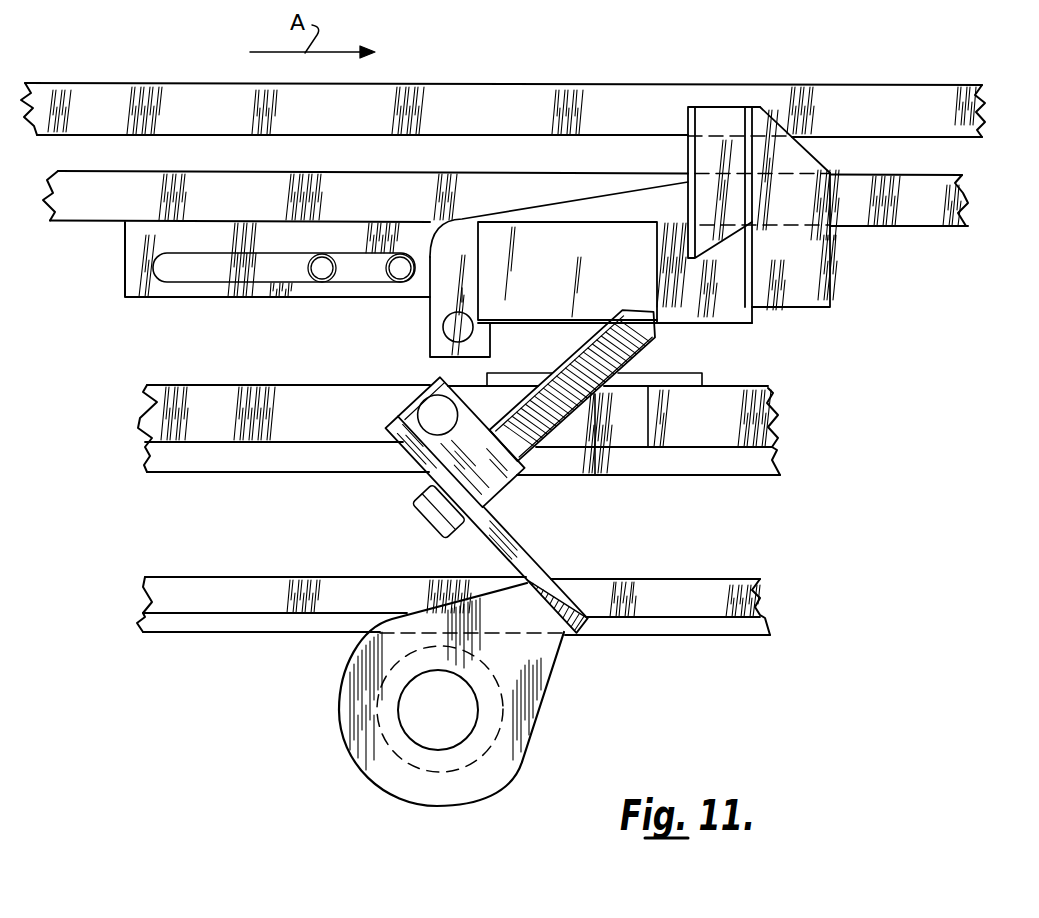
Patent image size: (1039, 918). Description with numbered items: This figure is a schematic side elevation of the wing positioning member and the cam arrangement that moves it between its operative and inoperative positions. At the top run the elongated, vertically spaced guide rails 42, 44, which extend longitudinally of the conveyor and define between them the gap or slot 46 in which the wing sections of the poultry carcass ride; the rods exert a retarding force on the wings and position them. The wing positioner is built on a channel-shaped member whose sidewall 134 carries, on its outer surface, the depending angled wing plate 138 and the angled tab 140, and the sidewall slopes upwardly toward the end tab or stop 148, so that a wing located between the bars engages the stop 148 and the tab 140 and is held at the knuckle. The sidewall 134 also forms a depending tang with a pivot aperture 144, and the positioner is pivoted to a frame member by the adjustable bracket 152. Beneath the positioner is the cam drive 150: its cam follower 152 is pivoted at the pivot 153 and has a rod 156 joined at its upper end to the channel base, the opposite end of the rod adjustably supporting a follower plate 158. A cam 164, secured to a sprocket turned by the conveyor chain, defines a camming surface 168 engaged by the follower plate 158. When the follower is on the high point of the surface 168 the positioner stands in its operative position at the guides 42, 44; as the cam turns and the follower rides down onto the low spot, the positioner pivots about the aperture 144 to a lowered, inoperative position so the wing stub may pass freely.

The guide rail 42 is at (890, 97).
The guide rail 44 is at (942, 183).
The gap or slot 46 is at (933, 153).
The sidewall 134 is at (553, 205).
The wing plate 138 is at (621, 273).
The angled tab 140 is at (718, 116).
The pivot aperture 144 is at (445, 333).
The end tab or stop 148 is at (811, 215).
The cam drive 150 is at (712, 510).
The adjustable bracket / cam follower 152 is at (235, 287).
The pivot 153 is at (435, 414).
The rod 156 is at (647, 347).
The follower plate 158 is at (507, 538).
The cam 164 is at (542, 675).
The camming surface 168 is at (527, 758).